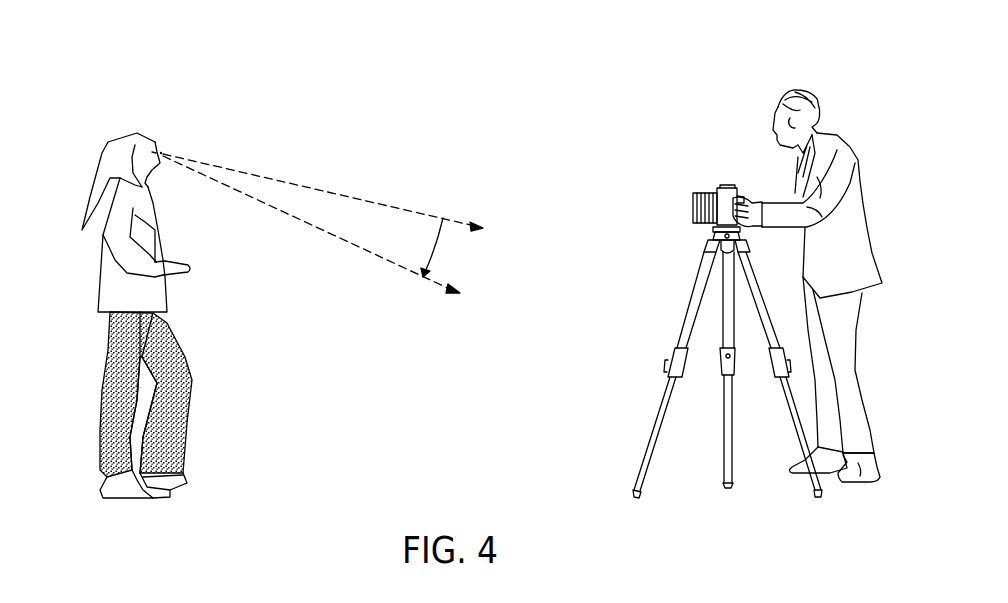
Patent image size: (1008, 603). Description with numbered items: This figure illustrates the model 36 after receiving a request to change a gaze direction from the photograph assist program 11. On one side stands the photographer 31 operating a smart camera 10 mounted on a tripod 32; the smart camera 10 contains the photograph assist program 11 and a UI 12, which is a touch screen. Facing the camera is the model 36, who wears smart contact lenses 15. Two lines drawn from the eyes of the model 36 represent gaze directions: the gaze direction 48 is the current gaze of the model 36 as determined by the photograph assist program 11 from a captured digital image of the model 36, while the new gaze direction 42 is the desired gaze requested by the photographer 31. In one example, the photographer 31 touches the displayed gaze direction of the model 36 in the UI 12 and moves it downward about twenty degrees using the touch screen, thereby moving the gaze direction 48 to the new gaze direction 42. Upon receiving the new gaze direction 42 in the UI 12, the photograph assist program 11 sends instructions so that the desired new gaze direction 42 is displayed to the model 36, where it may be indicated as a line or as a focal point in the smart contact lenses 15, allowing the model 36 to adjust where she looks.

The smart camera 10 is at (713, 190).
The photograph assist program 11 is at (726, 195).
The UI 12 is at (745, 190).
The smart contact lenses 15 is at (163, 150).
The photographer 31 is at (838, 140).
The tripod 32 is at (652, 418).
The model 36 is at (103, 164).
The new gaze direction 42 is at (392, 262).
The gaze direction 48 is at (358, 202).